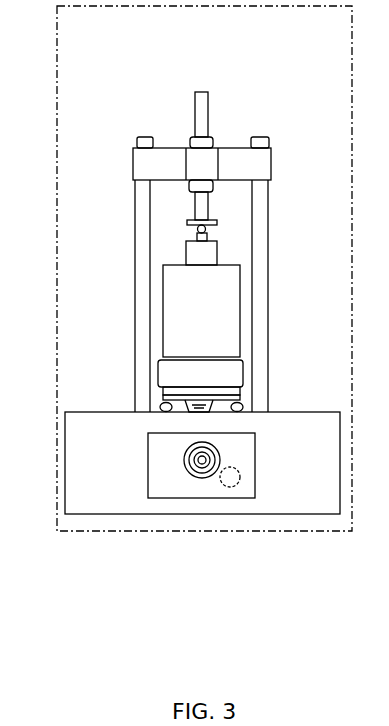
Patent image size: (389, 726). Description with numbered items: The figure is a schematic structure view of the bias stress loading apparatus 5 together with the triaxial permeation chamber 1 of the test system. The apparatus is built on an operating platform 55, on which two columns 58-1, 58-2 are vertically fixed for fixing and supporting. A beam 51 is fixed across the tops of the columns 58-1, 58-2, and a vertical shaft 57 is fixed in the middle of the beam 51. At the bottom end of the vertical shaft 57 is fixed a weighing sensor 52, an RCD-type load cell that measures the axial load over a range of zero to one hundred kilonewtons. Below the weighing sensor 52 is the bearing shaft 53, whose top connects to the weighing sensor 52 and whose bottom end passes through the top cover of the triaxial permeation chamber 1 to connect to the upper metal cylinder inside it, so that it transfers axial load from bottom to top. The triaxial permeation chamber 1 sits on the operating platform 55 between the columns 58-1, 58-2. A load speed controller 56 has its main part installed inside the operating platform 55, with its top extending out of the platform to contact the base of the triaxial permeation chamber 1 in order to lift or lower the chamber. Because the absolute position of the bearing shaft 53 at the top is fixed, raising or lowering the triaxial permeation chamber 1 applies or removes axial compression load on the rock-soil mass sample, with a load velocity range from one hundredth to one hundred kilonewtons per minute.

The bias stress loading apparatus 5 is at (257, 533).
The triaxial permeation chamber 1 is at (177, 312).
The beam 51 is at (160, 168).
The weighing sensor 52 is at (218, 224).
The bearing shaft 53 is at (195, 235).
The operating platform 55 is at (130, 408).
The load speed controller 56 is at (182, 464).
The vertical shaft 57 is at (198, 90).
The column 58-1 is at (340, 340).
The column 58-2 is at (138, 345).